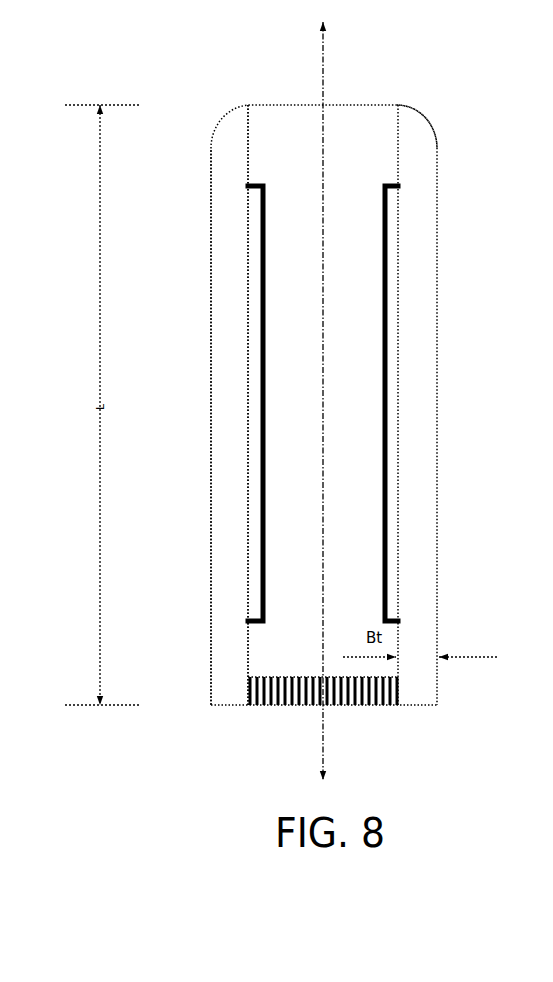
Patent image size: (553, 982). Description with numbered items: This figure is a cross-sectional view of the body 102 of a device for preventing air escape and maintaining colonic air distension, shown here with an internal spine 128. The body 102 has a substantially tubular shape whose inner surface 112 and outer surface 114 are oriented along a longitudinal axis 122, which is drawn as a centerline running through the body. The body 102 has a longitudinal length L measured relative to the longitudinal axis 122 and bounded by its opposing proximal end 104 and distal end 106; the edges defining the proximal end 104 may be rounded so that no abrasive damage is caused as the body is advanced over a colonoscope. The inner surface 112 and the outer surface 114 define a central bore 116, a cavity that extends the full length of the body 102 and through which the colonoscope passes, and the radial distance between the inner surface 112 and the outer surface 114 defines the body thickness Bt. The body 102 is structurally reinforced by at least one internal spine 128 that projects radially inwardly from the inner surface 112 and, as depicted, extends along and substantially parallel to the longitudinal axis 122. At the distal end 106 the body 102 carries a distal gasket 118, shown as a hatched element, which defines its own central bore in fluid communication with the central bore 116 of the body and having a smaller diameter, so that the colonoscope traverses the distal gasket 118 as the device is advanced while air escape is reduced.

The body 102 is at (438, 300).
The proximal end 104 is at (427, 122).
The distal end 106 is at (440, 697).
The inner surface 112 is at (248, 357).
The outer surface 114 is at (210, 432).
The central bore 116 is at (303, 235).
The distal gasket 118 is at (250, 677).
The longitudinal axis 122 is at (363, 87).
The internal spine 128 is at (387, 420).